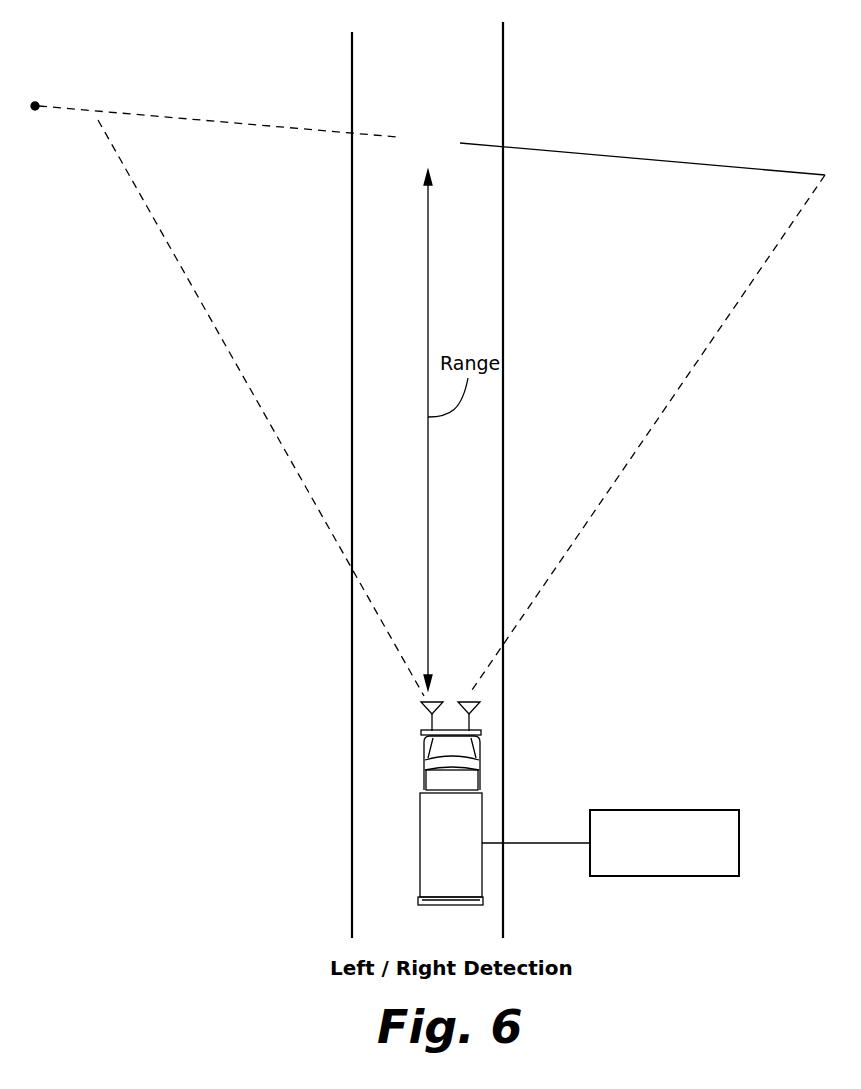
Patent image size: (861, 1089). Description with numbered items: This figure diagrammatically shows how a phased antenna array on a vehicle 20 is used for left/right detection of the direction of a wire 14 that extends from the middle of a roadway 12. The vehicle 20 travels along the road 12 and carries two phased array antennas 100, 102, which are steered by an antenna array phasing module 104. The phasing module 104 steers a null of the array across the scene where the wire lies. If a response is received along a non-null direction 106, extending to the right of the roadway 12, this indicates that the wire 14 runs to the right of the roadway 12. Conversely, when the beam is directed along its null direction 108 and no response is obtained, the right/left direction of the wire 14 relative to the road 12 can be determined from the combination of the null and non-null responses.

The road 12 is at (445, 35).
The wire 14 is at (578, 152).
The vehicle 20 is at (462, 849).
The phased array antenna 100 is at (425, 710).
The phased array antenna 102 is at (475, 711).
The antenna array phasing module 104 is at (668, 810).
The non-null direction 106 is at (668, 407).
The null direction 108 is at (220, 340).